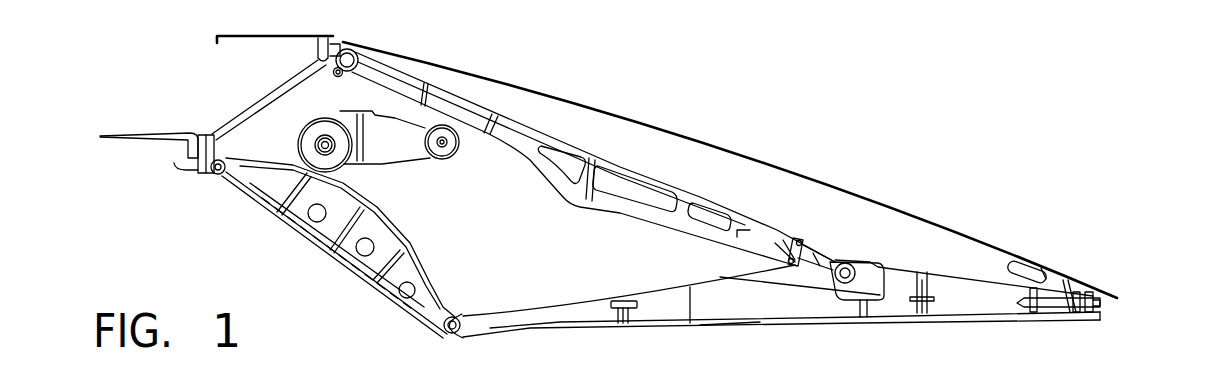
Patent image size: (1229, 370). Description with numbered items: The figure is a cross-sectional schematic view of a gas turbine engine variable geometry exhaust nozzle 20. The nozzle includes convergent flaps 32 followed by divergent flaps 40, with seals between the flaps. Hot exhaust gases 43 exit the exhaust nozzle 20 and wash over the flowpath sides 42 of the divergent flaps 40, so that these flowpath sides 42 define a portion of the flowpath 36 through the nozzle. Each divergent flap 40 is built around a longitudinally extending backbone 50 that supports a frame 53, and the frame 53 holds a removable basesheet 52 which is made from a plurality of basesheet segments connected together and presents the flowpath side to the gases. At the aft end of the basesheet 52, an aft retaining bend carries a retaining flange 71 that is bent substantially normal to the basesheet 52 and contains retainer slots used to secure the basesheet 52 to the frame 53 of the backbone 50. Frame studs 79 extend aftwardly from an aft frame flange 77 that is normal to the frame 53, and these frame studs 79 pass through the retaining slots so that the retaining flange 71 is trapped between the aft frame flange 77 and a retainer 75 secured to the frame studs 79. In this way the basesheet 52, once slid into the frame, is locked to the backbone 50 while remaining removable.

The variable geometry exhaust nozzle 20 is at (679, 115).
The convergent flaps 32 is at (237, 193).
The flowpath 36 is at (305, 282).
The divergent flaps 40 is at (948, 323).
The flowpath sides 42 is at (758, 328).
The hot exhaust gases 43 is at (193, 272).
The backbone 50 is at (937, 272).
The basesheet 52 is at (578, 333).
The frame 53 is at (727, 317).
The retaining flange 71 is at (1087, 288).
The retainer 75 is at (1117, 288).
The aft frame flange 77 is at (1083, 283).
The frame studs 79 is at (1102, 302).